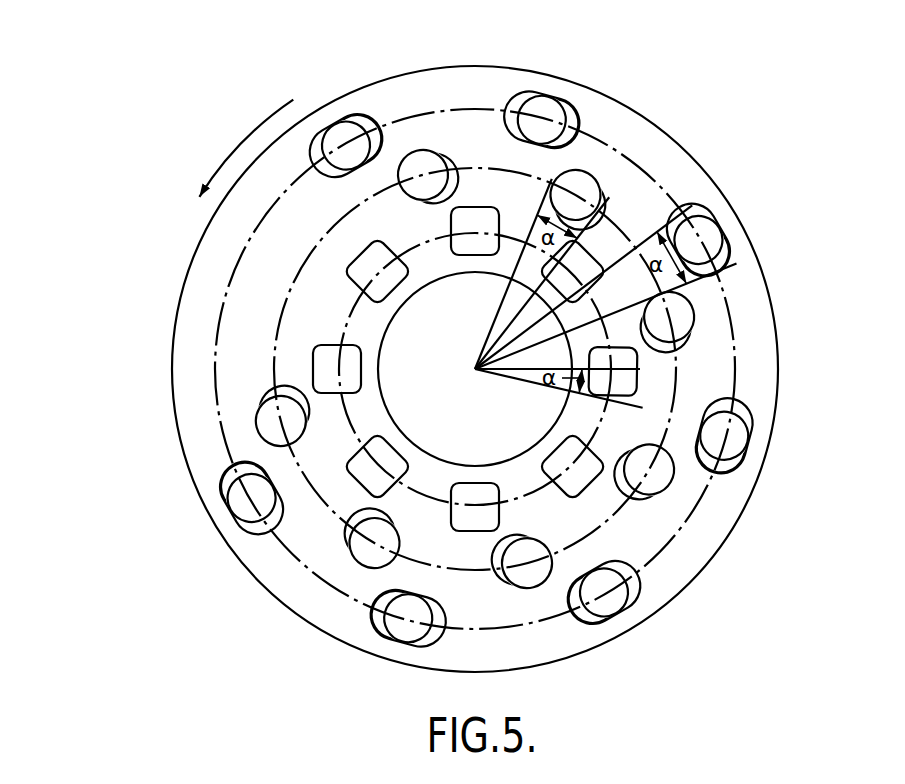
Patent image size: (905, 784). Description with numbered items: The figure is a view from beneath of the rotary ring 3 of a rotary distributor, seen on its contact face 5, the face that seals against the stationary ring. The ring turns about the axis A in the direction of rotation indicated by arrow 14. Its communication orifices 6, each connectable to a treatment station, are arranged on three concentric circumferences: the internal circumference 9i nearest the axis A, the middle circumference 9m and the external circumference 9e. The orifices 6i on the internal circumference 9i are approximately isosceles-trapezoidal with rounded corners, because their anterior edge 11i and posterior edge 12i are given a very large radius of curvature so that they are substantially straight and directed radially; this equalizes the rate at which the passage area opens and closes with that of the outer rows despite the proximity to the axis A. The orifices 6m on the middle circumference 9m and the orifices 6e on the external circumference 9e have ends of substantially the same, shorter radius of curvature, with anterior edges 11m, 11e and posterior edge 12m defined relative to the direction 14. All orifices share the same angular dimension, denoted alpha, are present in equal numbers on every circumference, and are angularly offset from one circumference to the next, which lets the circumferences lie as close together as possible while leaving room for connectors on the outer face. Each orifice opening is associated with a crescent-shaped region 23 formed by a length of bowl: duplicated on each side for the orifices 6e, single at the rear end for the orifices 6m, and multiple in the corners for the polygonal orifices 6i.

The rotary ring 3 is at (632, 101).
The contact face 5 is at (510, 80).
The communication orifices 6 is at (486, 218).
The orifices on the internal circumference 6i is at (410, 325).
The orifices on the middle circumference 6m is at (297, 258).
The orifices on the external circumference 6e is at (215, 292).
The internal circumference 9i is at (372, 470).
The middle circumference 9m is at (323, 503).
The external circumference 9e is at (223, 538).
The anterior edge of internal orifice 11i is at (320, 382).
The anterior edge of middle orifice 11m is at (273, 440).
The anterior edge of external orifice 11e is at (232, 494).
The posterior edge of internal orifice 12i is at (385, 452).
The posterior edge of middle orifice 12m is at (360, 554).
The direction of rotation 14 is at (234, 157).
The crescent-shaped region 23 is at (297, 243).
The axis A is at (591, 293).